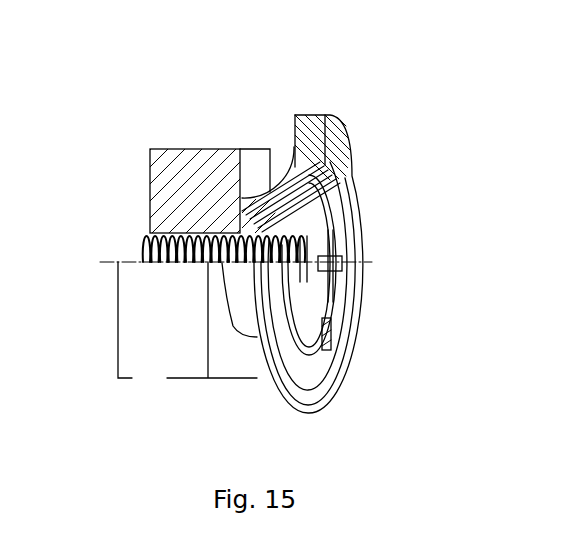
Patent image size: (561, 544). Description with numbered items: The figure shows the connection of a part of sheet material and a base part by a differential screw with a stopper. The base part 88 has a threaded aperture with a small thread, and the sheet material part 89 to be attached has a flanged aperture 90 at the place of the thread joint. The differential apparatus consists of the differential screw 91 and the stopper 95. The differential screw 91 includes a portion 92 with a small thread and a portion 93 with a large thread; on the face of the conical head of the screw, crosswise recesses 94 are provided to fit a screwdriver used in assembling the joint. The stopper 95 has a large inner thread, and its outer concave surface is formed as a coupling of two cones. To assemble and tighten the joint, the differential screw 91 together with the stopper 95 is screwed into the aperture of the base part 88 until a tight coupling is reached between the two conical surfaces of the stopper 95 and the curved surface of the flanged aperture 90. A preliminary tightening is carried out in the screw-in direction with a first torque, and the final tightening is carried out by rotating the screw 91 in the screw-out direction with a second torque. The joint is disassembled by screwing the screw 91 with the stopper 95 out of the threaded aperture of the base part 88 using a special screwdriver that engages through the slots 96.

The base part 88 is at (163, 290).
The sheet material part 89 is at (307, 147).
The flanged aperture 90 is at (300, 190).
The differential screw 91 is at (256, 243).
The portion with a small thread 92 is at (188, 234).
The portion with a large thread 93 is at (265, 228).
The crosswise recesses 94 is at (330, 281).
The stopper 95 is at (347, 227).
The slots 96 is at (333, 336).